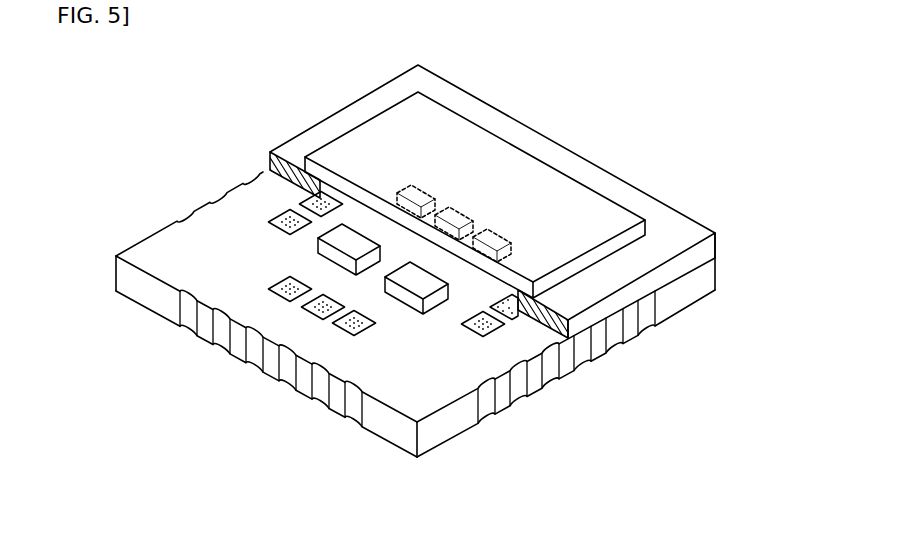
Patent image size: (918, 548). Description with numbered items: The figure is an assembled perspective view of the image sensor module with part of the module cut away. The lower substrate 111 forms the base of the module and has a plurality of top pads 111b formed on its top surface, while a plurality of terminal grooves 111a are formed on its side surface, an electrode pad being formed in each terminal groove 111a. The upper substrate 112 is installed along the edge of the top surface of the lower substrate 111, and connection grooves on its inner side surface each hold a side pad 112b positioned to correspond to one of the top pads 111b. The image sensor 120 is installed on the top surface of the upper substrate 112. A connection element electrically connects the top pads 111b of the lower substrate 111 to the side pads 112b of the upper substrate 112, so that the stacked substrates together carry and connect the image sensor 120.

The lower substrate 111 is at (173, 240).
The terminal groove 111a is at (613, 327).
The top pad 111b is at (487, 330).
The upper substrate 112 is at (357, 107).
The side pad 112b is at (307, 193).
The image sensor 120 is at (525, 167).